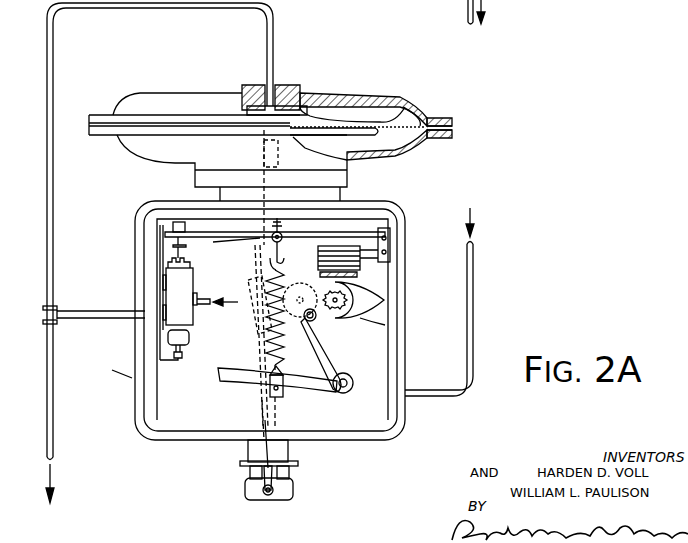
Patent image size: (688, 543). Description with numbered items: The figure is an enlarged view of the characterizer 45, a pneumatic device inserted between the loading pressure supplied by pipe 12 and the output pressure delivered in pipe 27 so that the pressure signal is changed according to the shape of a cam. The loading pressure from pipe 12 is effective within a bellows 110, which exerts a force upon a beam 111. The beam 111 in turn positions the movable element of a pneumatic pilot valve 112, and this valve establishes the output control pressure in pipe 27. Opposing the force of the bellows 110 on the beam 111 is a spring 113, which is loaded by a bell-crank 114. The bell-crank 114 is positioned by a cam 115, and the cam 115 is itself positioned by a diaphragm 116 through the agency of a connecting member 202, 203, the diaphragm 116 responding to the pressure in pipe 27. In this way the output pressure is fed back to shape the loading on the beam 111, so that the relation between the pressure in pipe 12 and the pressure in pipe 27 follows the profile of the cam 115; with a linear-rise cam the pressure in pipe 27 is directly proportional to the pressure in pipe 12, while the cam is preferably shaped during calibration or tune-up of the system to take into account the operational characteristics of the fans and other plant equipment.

The pipe 12 is at (475, 275).
The pipe 27 is at (54, 432).
The characterizer 45 is at (340, 442).
The bellows 110 is at (343, 253).
The beam 111 is at (247, 244).
The pneumatic pilot valve 112 is at (193, 320).
The spring 113 is at (280, 344).
The bell-crank 114 is at (224, 390).
The cam 115 is at (383, 308).
The diaphragm 116 is at (405, 112).
The member 202 is at (262, 156).
The member 203 is at (246, 492).